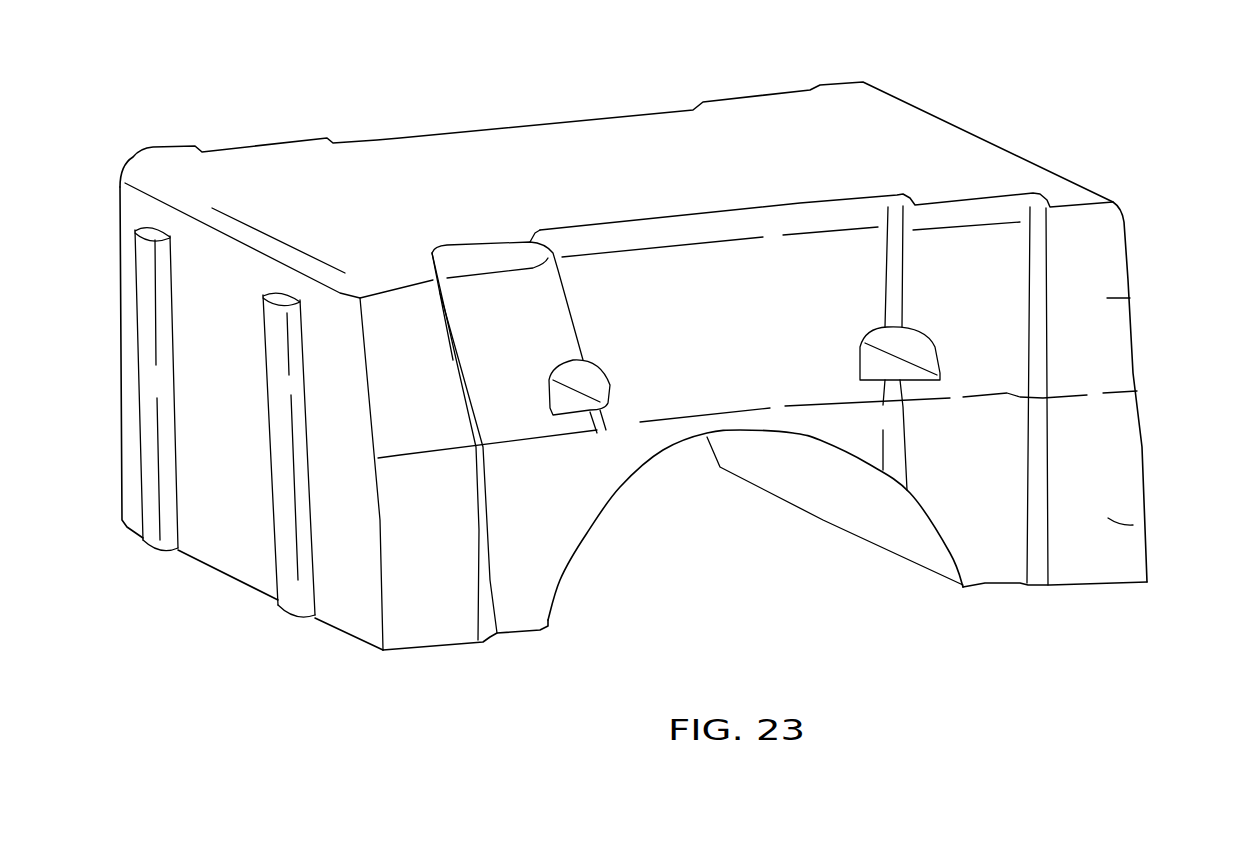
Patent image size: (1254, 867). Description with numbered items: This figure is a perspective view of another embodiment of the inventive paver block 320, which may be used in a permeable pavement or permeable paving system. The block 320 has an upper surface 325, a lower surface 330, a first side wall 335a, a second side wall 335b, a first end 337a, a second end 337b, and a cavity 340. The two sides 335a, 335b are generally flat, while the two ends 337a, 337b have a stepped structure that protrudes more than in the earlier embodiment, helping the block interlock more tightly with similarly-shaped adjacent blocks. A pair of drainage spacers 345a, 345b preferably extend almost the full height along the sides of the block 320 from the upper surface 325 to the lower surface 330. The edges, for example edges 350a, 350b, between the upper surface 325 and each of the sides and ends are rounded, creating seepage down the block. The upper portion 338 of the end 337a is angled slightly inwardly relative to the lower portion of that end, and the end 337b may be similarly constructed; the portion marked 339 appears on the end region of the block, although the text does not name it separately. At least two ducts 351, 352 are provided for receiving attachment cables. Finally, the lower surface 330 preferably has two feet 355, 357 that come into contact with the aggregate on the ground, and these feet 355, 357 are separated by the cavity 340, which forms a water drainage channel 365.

The block 320 is at (612, 92).
The upper surface 325 is at (543, 163).
The lower surface 330 is at (461, 660).
The first side wall 335a is at (133, 203).
The second side wall 335b is at (1140, 378).
The first end 337a is at (810, 293).
The second end 337b is at (378, 138).
The upper portion 338 is at (1133, 297).
The end wall lower portion 339 is at (1143, 525).
The cavity 340 is at (683, 447).
The drainage spacer 345a is at (155, 533).
The drainage spacer 345b is at (300, 595).
The edge 350a is at (190, 193).
The edge 350b is at (1115, 203).
The duct 351 is at (597, 433).
The duct 352 is at (883, 380).
The foot 355 is at (417, 652).
The foot 357 is at (1040, 592).
The water drainage channel 365 is at (758, 531).